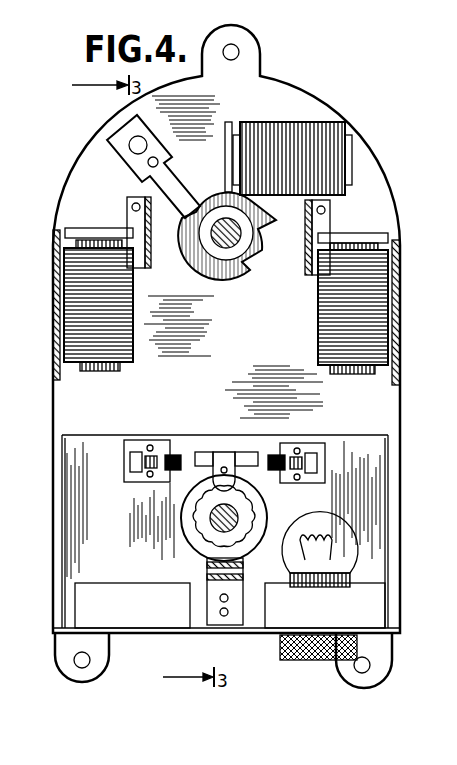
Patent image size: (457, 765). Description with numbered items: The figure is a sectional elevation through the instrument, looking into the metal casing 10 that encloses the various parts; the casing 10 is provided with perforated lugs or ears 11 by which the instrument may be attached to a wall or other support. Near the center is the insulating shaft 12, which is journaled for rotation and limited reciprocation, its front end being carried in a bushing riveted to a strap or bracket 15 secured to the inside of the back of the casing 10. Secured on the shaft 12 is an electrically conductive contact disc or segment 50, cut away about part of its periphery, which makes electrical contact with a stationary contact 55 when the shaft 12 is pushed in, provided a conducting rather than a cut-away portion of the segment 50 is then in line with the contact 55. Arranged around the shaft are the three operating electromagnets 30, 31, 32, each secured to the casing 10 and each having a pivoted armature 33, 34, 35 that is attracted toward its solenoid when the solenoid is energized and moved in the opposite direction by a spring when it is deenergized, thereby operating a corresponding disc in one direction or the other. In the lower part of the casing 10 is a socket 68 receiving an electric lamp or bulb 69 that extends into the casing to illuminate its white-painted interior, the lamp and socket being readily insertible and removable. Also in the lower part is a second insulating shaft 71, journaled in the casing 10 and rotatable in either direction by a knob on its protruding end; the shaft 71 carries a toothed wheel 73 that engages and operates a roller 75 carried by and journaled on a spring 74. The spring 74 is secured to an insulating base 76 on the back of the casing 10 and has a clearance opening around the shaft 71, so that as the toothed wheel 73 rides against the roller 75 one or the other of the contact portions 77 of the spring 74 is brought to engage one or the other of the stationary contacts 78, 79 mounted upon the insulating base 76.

The casing 10 is at (78, 195).
The perforated lugs or ears 11 is at (252, 52).
The shaft 12 is at (228, 245).
The strap or bracket 15 is at (150, 265).
The electromagnet 30 is at (372, 327).
The electromagnet 31 is at (310, 140).
The electromagnet 32 is at (122, 350).
The pivoted armature 33 is at (362, 233).
The pivoted armature 34 is at (232, 120).
The pivoted armature 35 is at (93, 228).
The contact disc or segment 50 is at (243, 272).
The contact 55 is at (186, 200).
The socket 68 is at (292, 650).
The electric lamp or bulb 69 is at (338, 528).
The shaft 71 is at (240, 545).
The toothed wheel 73 is at (198, 546).
The spring 74 is at (182, 535).
The roller 75 is at (245, 470).
The insulating base 76 is at (85, 445).
The contact portions 77 is at (222, 452).
The stationary contact 78 is at (172, 453).
The stationary contact 79 is at (282, 458).